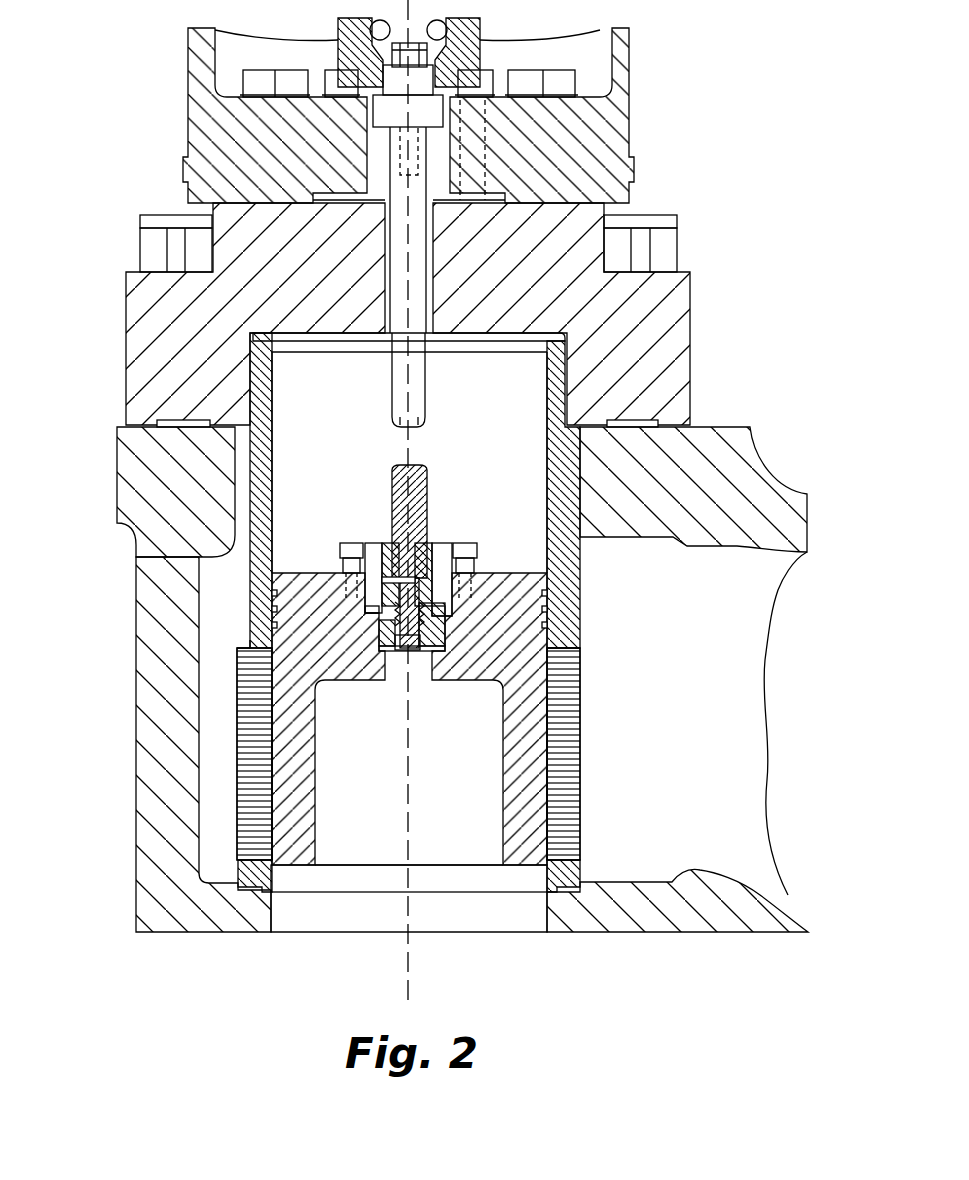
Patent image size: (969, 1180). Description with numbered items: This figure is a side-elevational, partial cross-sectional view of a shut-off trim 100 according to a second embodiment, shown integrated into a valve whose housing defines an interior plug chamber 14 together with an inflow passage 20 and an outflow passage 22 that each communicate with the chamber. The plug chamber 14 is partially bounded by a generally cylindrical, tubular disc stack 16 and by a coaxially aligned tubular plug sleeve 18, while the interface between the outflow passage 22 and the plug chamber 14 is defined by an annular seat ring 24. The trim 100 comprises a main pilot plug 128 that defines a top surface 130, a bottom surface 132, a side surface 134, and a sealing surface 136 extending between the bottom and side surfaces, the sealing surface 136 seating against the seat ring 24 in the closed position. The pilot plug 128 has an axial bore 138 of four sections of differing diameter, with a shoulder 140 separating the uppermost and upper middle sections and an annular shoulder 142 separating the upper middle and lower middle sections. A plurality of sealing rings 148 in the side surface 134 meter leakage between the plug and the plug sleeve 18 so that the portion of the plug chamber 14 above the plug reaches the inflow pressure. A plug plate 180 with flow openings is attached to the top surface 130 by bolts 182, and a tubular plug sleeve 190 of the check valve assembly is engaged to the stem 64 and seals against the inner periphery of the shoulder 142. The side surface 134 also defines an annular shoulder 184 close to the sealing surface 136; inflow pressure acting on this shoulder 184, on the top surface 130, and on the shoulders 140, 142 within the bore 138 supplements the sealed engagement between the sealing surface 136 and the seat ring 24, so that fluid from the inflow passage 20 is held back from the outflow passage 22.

The plug chamber 14 is at (493, 442).
The disc stack 16 is at (570, 712).
The plug sleeve 18 is at (572, 556).
The inflow passage 20 is at (703, 690).
The outflow passage 22 is at (463, 915).
The seat ring 24 is at (570, 872).
The stem 64 is at (430, 372).
The shut-off trim 100 is at (358, 520).
The main pilot plug 128 is at (460, 613).
The top surface 130 is at (297, 565).
The bottom surface 132 is at (523, 868).
The side surface 134 is at (545, 750).
The sealing surface 136 is at (270, 858).
The bore 138 is at (465, 770).
The shoulder 140 is at (450, 606).
The annular shoulder 142 is at (370, 637).
The sealing rings 148 is at (280, 624).
The plug plate 180 is at (427, 545).
The bolts 182 is at (472, 541).
The annular shoulder 184 is at (545, 826).
The plug sleeve 190 is at (443, 633).